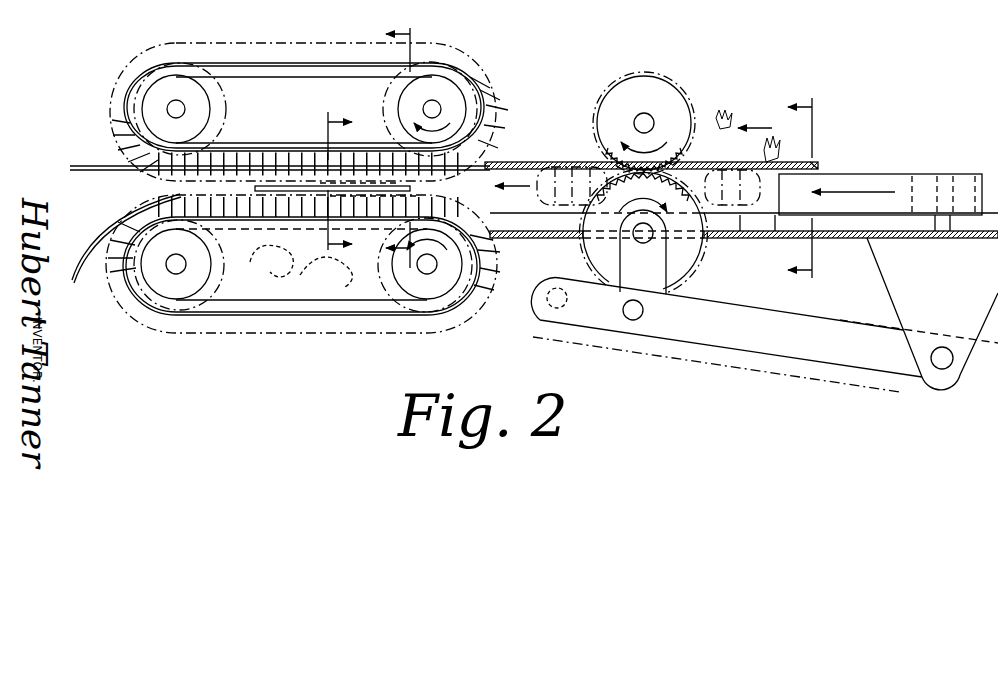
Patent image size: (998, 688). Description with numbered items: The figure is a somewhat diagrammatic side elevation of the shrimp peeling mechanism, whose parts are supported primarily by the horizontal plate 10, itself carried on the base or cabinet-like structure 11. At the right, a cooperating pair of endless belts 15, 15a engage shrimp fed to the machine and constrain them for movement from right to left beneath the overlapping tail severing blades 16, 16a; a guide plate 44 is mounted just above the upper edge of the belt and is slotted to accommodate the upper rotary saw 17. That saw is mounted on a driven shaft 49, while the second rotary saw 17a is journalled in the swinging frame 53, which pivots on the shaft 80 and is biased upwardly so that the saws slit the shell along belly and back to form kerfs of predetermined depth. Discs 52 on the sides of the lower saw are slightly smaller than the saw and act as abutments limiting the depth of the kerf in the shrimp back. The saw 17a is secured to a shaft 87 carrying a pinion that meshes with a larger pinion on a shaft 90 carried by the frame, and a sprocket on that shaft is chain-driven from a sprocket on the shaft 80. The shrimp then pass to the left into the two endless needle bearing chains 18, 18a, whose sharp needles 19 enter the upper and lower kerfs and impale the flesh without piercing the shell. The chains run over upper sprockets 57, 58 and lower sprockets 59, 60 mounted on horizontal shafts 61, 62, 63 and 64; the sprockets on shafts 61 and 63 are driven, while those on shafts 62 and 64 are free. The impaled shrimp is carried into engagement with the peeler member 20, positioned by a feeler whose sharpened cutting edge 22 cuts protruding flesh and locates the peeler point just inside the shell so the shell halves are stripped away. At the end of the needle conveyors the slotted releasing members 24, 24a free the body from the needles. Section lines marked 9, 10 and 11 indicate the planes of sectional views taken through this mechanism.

The section line 9- 9 is at (397, 143).
The horizontal plate 10 is at (536, 255).
The base or cabinet-like structure 11 is at (326, 172).
The endless belt 15 is at (870, 174).
The endless belt 15a is at (904, 10).
The tail severing blade 16 is at (786, 162).
The tail severing blade 16a is at (742, 4).
The rotary saw 17 is at (676, 108).
The rotary saw 17a is at (694, 258).
The needle bearing chain 18 is at (483, 62).
The needle bearing chain 18a is at (478, 318).
The needles 19 is at (112, 128).
The peeler member 20 is at (300, 184).
The cutting edge 22 is at (365, 184).
The releasing member 24 is at (100, 170).
The releasing member 24a is at (80, 250).
The guide plate 44 is at (535, 163).
The driven shaft 49 is at (646, 114).
The discs 52 is at (700, 240).
The swinging frame 53 is at (772, 292).
The sprocket 57 is at (384, 108).
The sprocket 58 is at (224, 108).
The sprocket 59 is at (226, 271).
The sprocket 60 is at (380, 270).
The horizontal shaft 61 is at (440, 100).
The horizontal shaft 62 is at (176, 110).
The horizontal shaft 63 is at (176, 270).
The horizontal shaft 64 is at (427, 270).
The shaft 80 is at (938, 362).
The shaft 87 is at (640, 234).
The shaft 90 is at (633, 320).